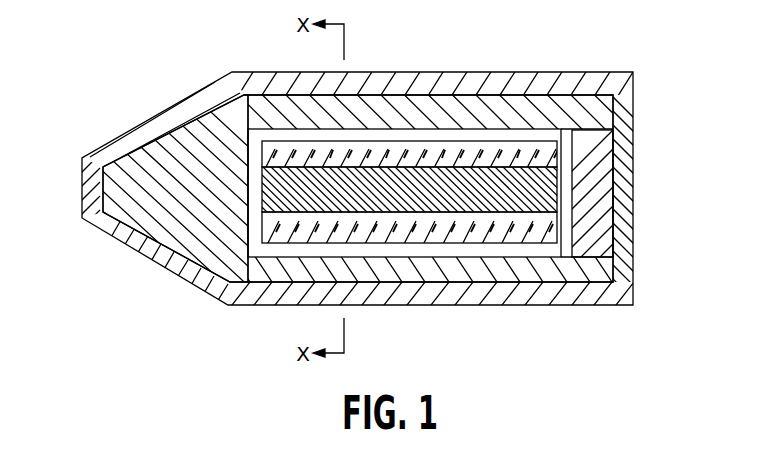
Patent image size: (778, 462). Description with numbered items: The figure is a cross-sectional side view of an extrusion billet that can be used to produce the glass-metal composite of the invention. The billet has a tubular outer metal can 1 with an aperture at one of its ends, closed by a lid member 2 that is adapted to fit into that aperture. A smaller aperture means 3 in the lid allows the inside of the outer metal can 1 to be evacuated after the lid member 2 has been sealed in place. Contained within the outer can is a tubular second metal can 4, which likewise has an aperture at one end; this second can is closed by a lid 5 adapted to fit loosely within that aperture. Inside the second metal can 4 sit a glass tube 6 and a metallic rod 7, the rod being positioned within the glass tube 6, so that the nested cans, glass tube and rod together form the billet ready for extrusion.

The tubular outer metal can 1 is at (243, 72).
The lid member 2 is at (620, 148).
The smaller aperture means 3 is at (612, 198).
The tubular second metal can 4 is at (188, 130).
The lid 5 is at (602, 233).
The glass tube 6 is at (427, 148).
The metallic rod 7 is at (483, 183).